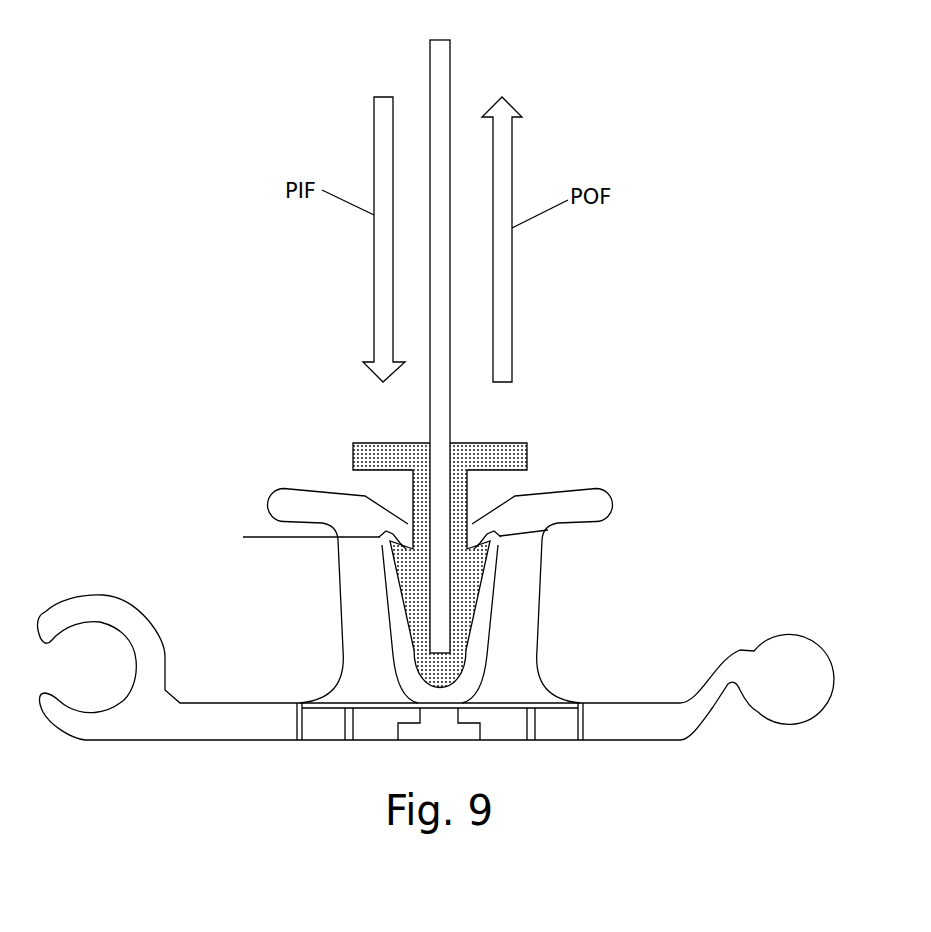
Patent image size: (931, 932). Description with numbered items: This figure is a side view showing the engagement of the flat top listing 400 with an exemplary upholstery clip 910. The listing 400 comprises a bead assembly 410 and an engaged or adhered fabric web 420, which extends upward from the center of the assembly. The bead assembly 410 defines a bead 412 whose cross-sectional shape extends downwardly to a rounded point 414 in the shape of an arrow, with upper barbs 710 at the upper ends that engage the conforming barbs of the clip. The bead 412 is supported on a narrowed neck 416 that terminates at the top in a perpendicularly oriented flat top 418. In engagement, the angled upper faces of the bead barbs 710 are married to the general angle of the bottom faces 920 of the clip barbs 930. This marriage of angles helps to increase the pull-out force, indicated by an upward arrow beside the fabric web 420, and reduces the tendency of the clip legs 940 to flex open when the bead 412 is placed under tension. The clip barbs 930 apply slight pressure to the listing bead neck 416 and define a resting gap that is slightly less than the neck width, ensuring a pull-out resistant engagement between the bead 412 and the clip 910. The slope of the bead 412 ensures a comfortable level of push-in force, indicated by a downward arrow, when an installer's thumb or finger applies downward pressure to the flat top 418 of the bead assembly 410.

The flat top listing 400 is at (407, 429).
The bead assembly 410 is at (471, 497).
The bead 412 is at (405, 622).
The rounded point 414 is at (440, 690).
The narrowed neck 416 is at (413, 487).
The flat top 418 is at (528, 457).
The fabric web 420 is at (454, 83).
The upper barbs 710 is at (388, 538).
The clip 910 is at (332, 668).
The bottom faces 920 is at (243, 537).
The clip barbs 930 is at (407, 528).
The clip legs 940 is at (355, 645).